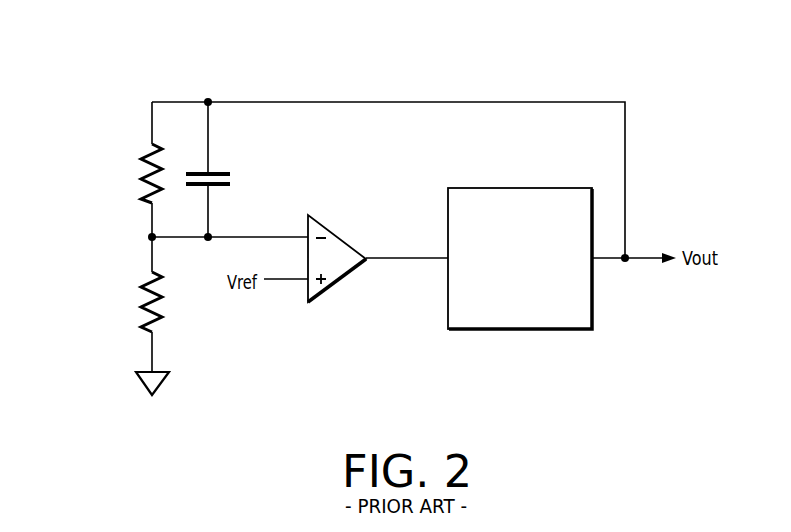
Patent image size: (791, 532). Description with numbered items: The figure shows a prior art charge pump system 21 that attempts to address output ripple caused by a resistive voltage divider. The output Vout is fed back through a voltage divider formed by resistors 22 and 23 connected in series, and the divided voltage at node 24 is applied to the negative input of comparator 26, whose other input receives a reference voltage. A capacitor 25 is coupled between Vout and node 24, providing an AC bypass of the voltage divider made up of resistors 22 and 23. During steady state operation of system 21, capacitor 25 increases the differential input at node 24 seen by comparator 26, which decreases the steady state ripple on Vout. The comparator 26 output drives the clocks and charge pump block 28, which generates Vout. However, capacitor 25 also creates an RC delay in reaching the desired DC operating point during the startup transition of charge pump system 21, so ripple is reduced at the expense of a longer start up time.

The charge pump system 21 is at (116, 40).
The resistor 22 is at (141, 159).
The resistor 23 is at (141, 287).
The node 24 is at (148, 237).
The capacitor 25 is at (218, 173).
The comparator 26 is at (330, 232).
The clocks and charge pump 28 is at (535, 188).